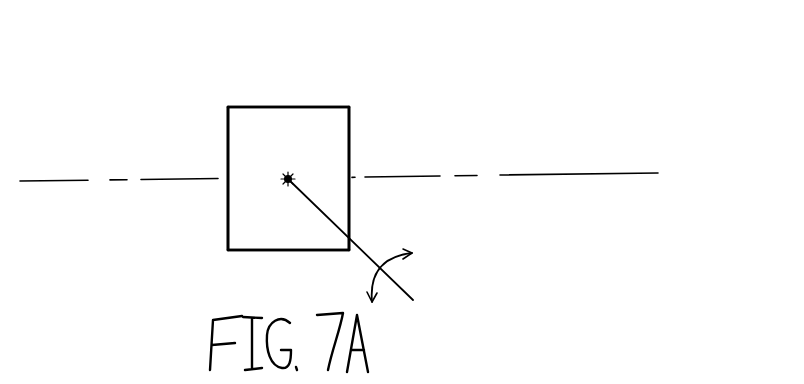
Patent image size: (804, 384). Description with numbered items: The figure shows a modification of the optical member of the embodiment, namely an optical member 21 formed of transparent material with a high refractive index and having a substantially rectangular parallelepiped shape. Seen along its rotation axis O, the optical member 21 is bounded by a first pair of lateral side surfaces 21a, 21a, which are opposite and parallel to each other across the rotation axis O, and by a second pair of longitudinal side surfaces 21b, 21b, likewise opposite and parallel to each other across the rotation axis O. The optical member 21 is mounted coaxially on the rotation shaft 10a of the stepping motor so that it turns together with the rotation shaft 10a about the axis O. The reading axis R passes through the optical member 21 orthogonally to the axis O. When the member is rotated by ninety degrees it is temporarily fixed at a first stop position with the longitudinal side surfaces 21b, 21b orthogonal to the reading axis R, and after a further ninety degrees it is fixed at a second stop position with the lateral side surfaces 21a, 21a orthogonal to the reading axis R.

The optical member 21 is at (320, 104).
The lateral side surfaces 21a is at (262, 105).
The longitudinal side surfaces 21b is at (392, 90).
The rotating shaft 10a is at (470, 253).
The rotation axis O is at (292, 178).
The reading axis R is at (643, 172).